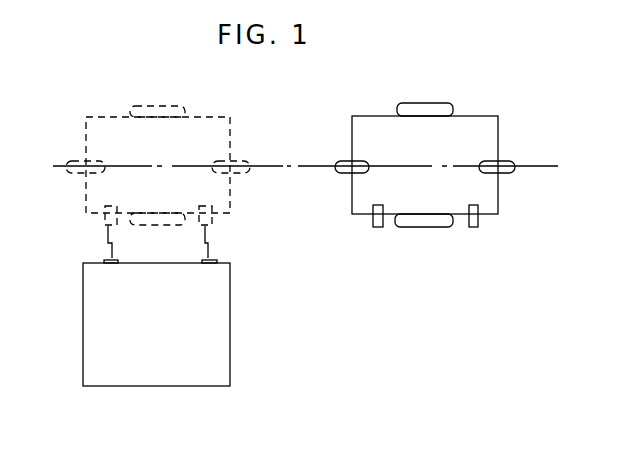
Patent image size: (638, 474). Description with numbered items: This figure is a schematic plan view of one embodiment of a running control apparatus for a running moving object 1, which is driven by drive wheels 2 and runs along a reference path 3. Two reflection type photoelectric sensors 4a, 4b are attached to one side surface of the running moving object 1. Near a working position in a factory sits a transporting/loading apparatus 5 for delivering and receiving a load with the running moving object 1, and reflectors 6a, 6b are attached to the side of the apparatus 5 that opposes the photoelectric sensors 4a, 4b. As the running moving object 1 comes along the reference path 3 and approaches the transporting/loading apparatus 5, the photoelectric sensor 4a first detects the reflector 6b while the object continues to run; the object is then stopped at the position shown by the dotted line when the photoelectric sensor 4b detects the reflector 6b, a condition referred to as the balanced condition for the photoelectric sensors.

The running moving object 1 is at (478, 120).
The drive wheels 2 is at (430, 106).
The reference path 3 is at (548, 165).
The reflection type photoelectric sensor 4a is at (376, 228).
The reflection type photoelectric sensor 4b is at (472, 228).
The transporting/loading apparatus 5 is at (225, 335).
The reflector 6a is at (108, 260).
The reflector 6b is at (208, 260).